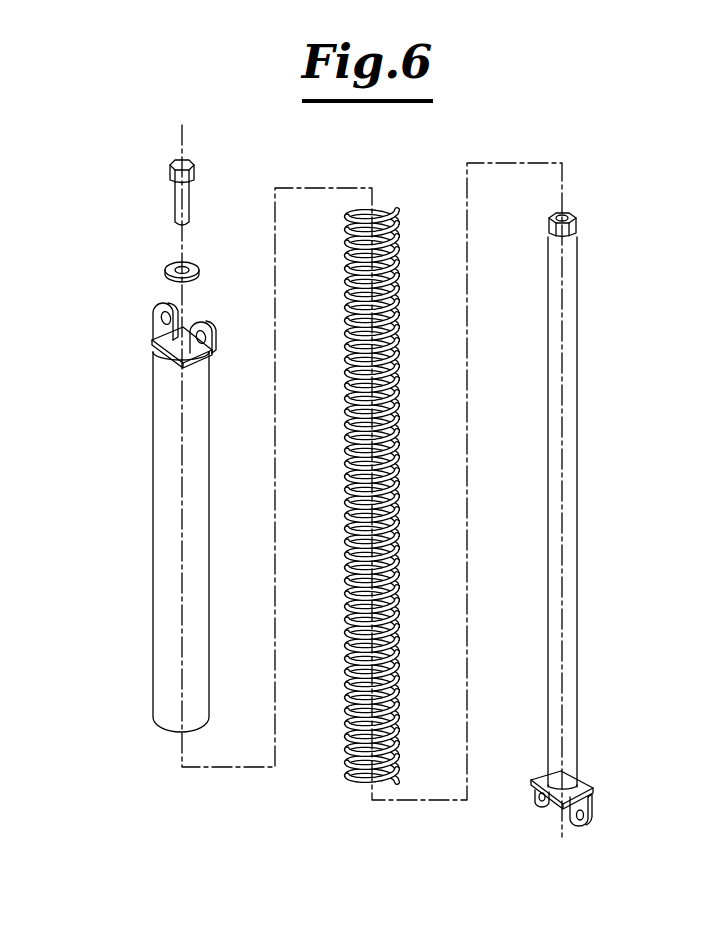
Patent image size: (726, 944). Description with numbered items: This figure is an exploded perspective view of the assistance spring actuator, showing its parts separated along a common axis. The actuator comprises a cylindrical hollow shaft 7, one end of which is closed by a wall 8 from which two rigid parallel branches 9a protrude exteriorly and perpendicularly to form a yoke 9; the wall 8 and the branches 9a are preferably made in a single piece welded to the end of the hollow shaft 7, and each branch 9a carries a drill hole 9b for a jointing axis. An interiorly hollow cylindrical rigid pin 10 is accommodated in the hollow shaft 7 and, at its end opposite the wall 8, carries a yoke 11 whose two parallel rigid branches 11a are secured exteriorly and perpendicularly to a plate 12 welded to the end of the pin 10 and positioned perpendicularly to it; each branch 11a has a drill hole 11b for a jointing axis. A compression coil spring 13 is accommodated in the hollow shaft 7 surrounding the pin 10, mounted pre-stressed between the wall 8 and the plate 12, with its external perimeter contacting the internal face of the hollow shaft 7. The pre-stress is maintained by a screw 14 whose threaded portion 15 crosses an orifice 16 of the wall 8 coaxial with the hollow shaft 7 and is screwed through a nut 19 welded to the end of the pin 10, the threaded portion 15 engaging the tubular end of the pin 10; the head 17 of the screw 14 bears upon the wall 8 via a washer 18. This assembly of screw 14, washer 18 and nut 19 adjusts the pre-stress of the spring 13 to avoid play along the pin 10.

The cylindrical hollow shaft 7 is at (146, 542).
The wall 8 is at (152, 341).
The yoke 9 is at (169, 332).
The branches 9a is at (156, 307).
The drill holes 9b is at (208, 339).
The pin 10 is at (575, 535).
The yoke 11 is at (575, 822).
The branches 11a is at (532, 796).
The drill holes 11b is at (585, 815).
The plate 12 is at (538, 778).
The spring 13 is at (343, 508).
The screw 14 is at (158, 165).
The threaded portion 15 is at (176, 200).
The orifice 16 is at (170, 356).
The head 17 is at (190, 162).
The washer 18 is at (199, 268).
The nut 19 is at (548, 222).